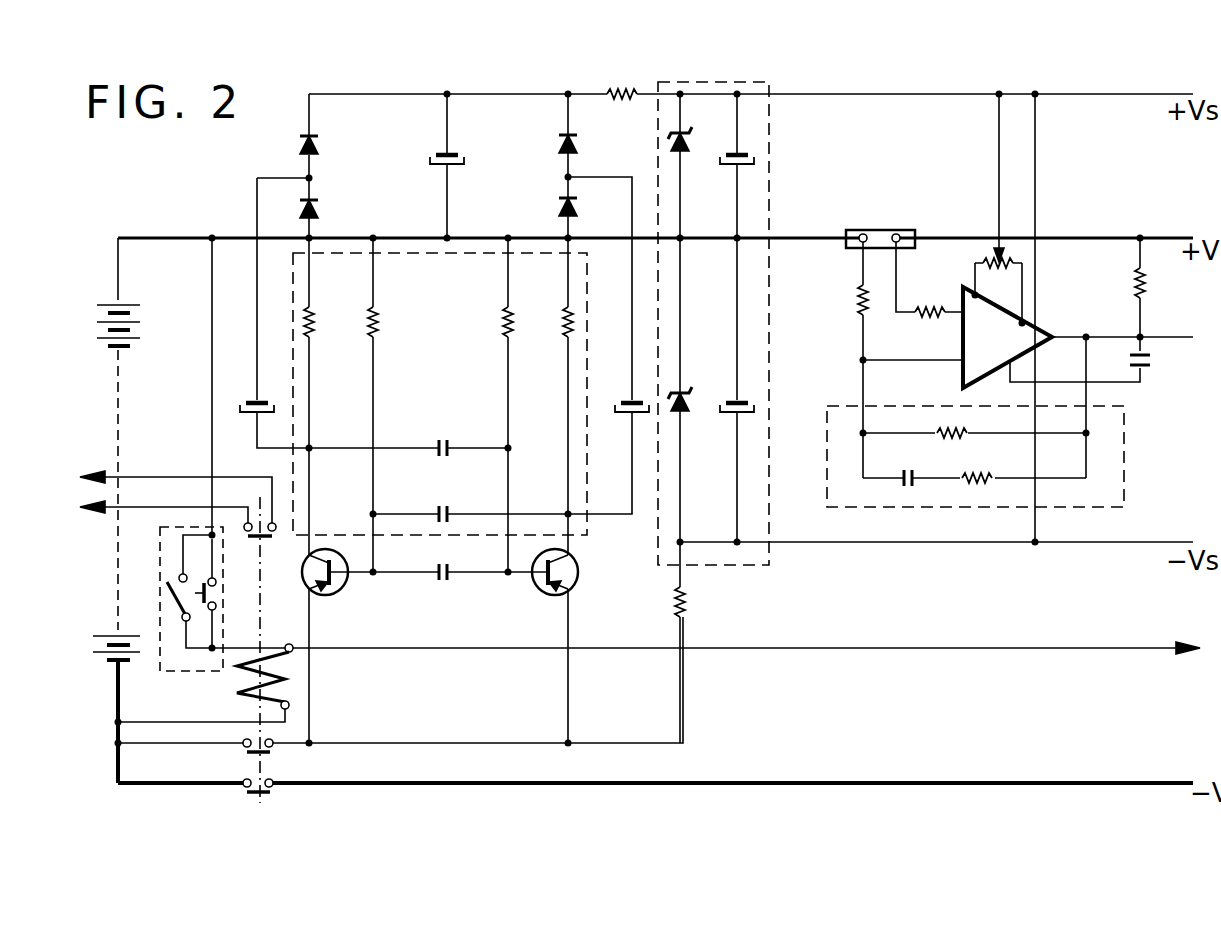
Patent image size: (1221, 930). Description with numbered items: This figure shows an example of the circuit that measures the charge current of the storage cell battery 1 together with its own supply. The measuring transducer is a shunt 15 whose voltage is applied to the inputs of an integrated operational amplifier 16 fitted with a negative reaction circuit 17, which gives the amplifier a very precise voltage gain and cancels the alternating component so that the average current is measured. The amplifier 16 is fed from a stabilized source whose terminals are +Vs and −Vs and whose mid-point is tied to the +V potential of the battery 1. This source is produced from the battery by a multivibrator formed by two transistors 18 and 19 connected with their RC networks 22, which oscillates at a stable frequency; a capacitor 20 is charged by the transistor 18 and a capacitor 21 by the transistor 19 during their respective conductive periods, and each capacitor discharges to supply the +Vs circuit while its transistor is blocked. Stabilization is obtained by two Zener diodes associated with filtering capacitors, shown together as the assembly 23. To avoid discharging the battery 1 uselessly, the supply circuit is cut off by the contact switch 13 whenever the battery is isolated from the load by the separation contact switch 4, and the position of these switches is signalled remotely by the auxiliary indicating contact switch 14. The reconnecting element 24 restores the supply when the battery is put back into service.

The storage cell battery 1 is at (90, 632).
The separation contact switch 4 is at (246, 788).
The contact switch 13 is at (266, 762).
The auxiliary indicating contact switch 14 is at (243, 536).
The shunt 15 is at (880, 226).
The integrated operational amplifier 16 is at (975, 362).
The negative reaction circuit 17 is at (1108, 471).
The transistor 18 is at (339, 586).
The transistor 19 is at (541, 586).
The capacitor 20 is at (245, 402).
The capacitor 21 is at (620, 400).
The RC networks 22 is at (588, 528).
The stabilization assembly 23 is at (728, 556).
The reconnecting element 24 is at (194, 664).